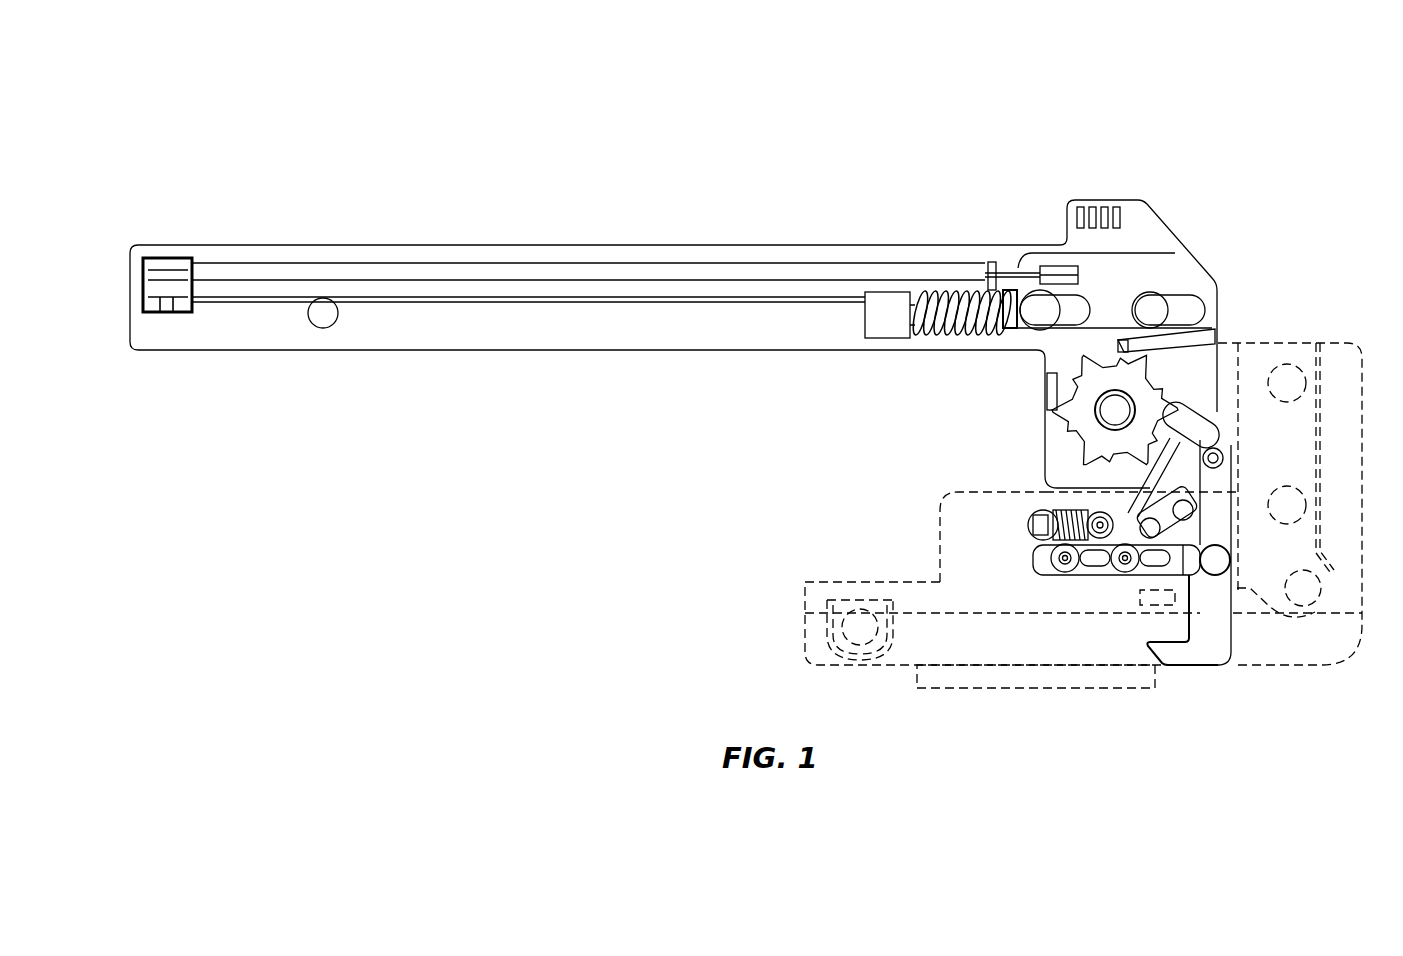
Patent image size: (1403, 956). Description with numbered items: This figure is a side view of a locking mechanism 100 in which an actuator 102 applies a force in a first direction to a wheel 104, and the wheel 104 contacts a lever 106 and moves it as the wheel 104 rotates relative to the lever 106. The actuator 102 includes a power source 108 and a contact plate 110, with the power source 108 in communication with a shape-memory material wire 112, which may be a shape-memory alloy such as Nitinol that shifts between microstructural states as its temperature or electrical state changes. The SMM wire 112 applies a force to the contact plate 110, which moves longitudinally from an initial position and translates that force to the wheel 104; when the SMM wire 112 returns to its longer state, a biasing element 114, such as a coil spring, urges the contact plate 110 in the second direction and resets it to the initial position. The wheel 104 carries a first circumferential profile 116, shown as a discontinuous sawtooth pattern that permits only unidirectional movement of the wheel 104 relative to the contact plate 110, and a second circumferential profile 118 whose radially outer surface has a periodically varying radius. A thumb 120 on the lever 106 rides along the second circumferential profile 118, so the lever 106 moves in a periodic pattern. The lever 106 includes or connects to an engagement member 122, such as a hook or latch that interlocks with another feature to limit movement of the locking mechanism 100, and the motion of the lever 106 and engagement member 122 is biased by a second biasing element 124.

The locking mechanism 100 is at (1257, 147).
The actuator 102 is at (1005, 238).
The wheel 104 is at (1044, 411).
The lever 106 is at (1225, 430).
The power source 108 is at (713, 270).
The contact plate 110 is at (1190, 270).
The shape-memory material wire 112 is at (1012, 270).
The biasing element 114 is at (945, 340).
The first circumferential profile 116 is at (1050, 379).
The second circumferential profile 118 is at (1050, 426).
The thumb 120 is at (1195, 404).
The engagement member 122 is at (1185, 652).
The biasing element 124 is at (1040, 505).